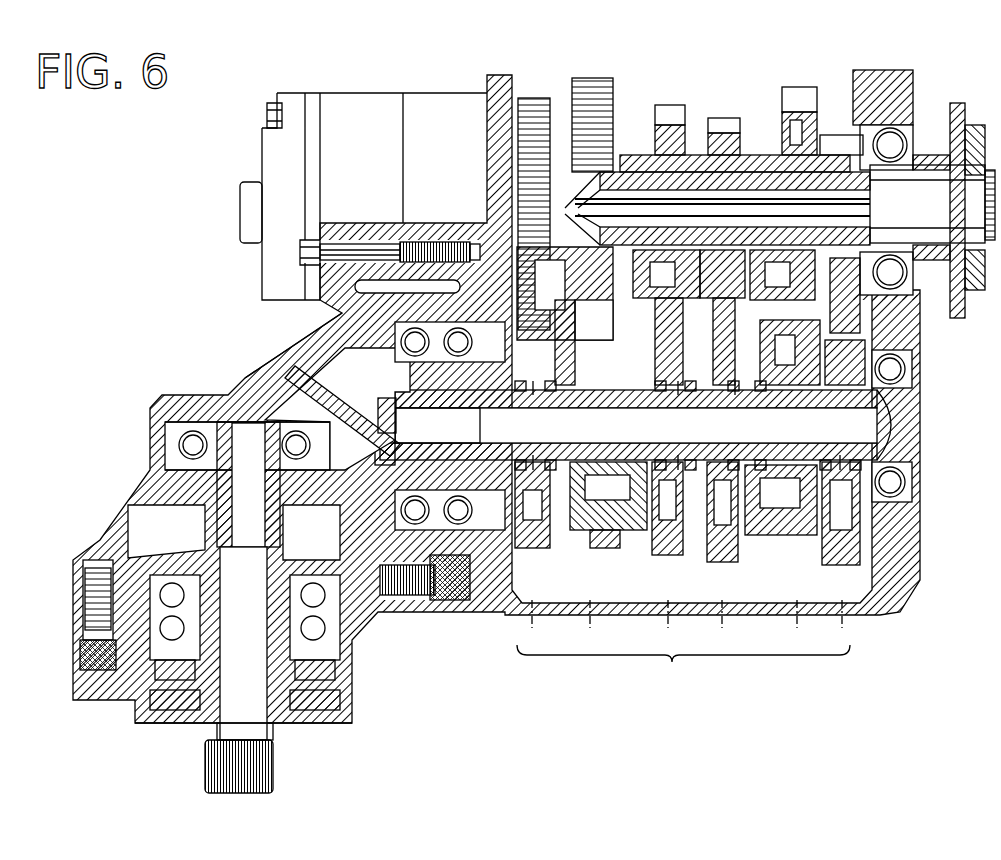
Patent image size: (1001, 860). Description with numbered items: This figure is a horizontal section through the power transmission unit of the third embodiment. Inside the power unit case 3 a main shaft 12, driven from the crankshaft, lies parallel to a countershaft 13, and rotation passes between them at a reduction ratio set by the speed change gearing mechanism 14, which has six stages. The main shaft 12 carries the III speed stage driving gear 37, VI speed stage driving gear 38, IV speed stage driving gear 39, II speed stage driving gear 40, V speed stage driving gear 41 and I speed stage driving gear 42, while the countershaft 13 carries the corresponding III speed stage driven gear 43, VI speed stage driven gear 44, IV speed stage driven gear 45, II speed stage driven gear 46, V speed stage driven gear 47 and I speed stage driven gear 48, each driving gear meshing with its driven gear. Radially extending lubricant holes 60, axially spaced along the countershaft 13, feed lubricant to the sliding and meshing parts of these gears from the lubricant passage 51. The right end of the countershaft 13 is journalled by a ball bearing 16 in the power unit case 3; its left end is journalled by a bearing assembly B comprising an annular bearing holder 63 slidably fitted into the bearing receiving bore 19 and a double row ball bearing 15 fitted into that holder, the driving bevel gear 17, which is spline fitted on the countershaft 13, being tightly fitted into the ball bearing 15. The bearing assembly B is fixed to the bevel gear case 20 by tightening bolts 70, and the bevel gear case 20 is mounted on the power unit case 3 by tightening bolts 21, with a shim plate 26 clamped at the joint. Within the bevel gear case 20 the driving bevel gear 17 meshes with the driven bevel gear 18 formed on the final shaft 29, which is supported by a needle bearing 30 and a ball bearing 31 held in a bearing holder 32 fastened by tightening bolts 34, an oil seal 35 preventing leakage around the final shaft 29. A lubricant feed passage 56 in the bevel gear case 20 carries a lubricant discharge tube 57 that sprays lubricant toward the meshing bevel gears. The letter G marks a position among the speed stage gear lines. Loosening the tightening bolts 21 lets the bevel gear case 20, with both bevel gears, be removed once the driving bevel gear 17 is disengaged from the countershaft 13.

The power unit case 3 is at (504, 633).
The main shaft 12 is at (754, 172).
The countershaft 13 is at (782, 408).
The speed change gearing mechanism 14 is at (683, 644).
The ball bearing 15 is at (404, 344).
The ball bearing 16 is at (905, 478).
The driving bevel gear 17 is at (372, 505).
The driven bevel gear 18 is at (325, 543).
The bearing receiving bore 19 is at (462, 296).
The bevel gear case 20 is at (258, 378).
The tightening bolts 21 is at (302, 252).
The shim plate 26 is at (403, 298).
The final shaft 29 is at (280, 722).
The needle bearing 30 is at (192, 430).
The ball bearing 31 is at (345, 645).
The bearing holder 32 is at (355, 665).
The tightening bolts 34 is at (120, 664).
The oil seal 35 is at (338, 724).
The III speed stage driving gear 37 is at (534, 98).
The VI speed stage driving gear 38 is at (613, 100).
The IV speed stage driving gear 39 is at (673, 107).
The II speed stage driving gear 40 is at (725, 119).
The V speed stage driving gear 41 is at (797, 88).
The I speed stage driving gear 42 is at (835, 135).
The III speed stage driven gear 43 is at (540, 548).
The VI speed stage driven gear 44 is at (597, 522).
The IV speed stage driven gear 45 is at (661, 556).
The II speed stage driven gear 46 is at (716, 564).
The V speed stage driven gear 47 is at (788, 536).
The I speed stage driven gear 48 is at (833, 570).
The lubricant passage 51 is at (640, 441).
The lubricant feed passage 56 is at (336, 385).
The lubricant discharge tube 57 is at (332, 412).
The lubricant holes 60 is at (534, 397).
The annular bearing holder 63 is at (409, 568).
The tightening bolts 70 is at (455, 578).
The bearing assembly B is at (477, 272).
The gear position G is at (753, 640).